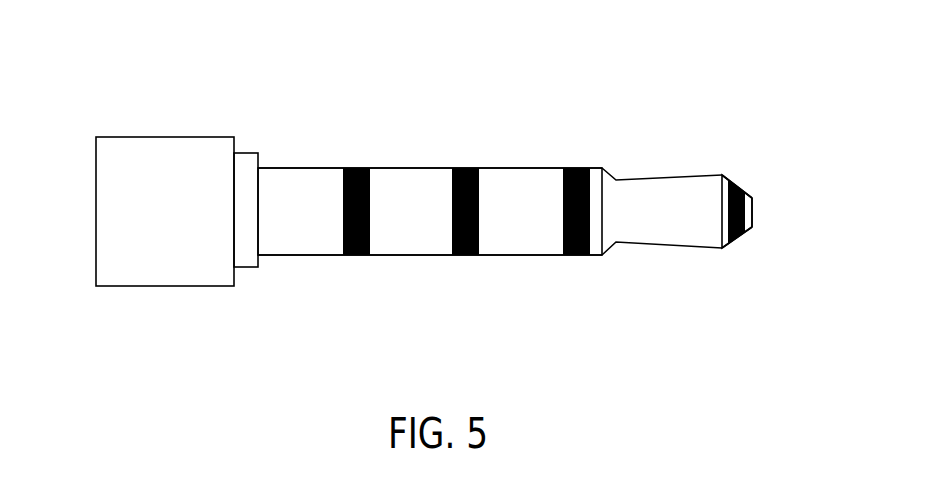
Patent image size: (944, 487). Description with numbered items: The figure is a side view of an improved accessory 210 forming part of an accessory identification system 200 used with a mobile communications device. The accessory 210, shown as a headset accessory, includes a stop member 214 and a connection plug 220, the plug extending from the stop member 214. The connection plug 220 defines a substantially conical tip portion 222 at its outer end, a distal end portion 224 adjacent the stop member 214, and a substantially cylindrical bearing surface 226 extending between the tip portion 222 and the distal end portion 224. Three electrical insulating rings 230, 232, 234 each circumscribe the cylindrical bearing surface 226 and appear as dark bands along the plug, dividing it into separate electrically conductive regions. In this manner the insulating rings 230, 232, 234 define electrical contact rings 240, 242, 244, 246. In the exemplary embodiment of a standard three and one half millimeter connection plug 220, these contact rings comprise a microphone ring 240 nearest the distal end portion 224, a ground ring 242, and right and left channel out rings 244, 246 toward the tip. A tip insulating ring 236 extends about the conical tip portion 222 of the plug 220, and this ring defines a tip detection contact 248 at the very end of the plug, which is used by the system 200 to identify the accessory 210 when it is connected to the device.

The accessory identification system 200 is at (768, 177).
The accessory 210 is at (150, 206).
The stop member 214 is at (259, 267).
The connection plug 220 is at (498, 170).
The conical tip portion 222 is at (708, 223).
The distal end portion 224 is at (278, 225).
The cylindrical bearing surface 226 is at (383, 256).
The electrical insulating ring 230 is at (343, 212).
The electrical insulating ring 232 is at (450, 210).
The electrical insulating ring 234 is at (565, 212).
The tip insulating ring 236 is at (722, 173).
The microphone ring 240 is at (288, 203).
The ground ring 242 is at (409, 205).
The right channel out ring 244 is at (519, 210).
The left channel out ring 246 is at (666, 210).
The tip detection contact 248 is at (747, 227).